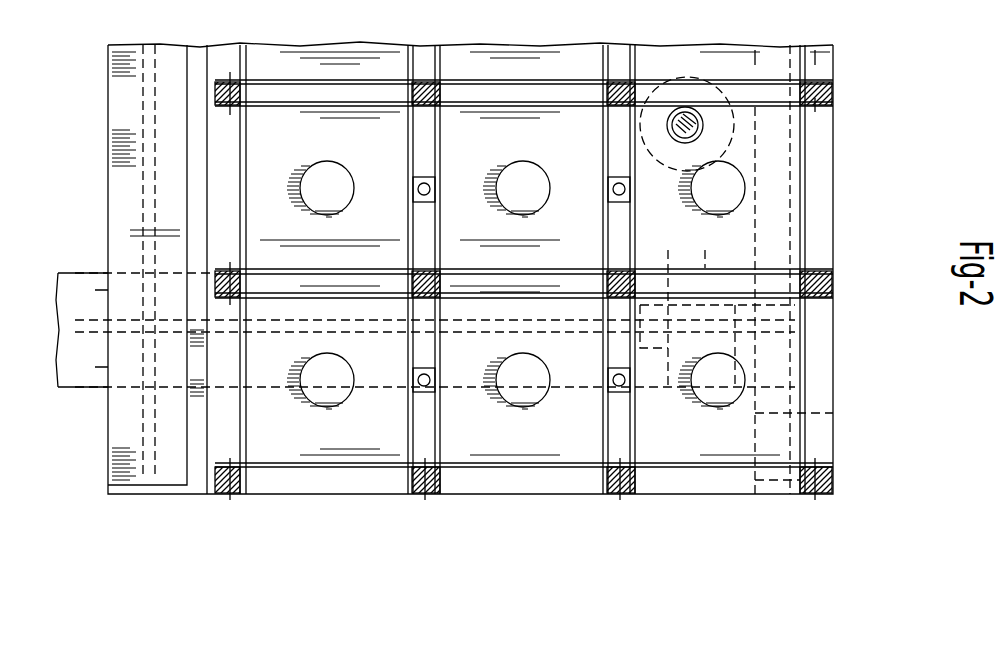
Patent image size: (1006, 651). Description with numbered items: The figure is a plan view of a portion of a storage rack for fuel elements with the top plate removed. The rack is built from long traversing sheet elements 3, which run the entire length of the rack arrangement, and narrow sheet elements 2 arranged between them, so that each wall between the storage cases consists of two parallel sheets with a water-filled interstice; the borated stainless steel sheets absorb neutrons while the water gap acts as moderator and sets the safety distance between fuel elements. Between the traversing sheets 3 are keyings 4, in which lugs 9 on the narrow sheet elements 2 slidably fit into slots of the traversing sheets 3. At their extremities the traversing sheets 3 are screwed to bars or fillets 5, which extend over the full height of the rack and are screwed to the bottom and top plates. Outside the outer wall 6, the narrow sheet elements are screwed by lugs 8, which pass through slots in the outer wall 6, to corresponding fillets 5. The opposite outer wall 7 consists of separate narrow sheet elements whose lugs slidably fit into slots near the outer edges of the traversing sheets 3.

The narrow sheet elements 2 is at (605, 243).
The long traversing sheet elements 3 is at (278, 298).
The keyings 4 is at (420, 270).
The bars or fillets 5 is at (215, 82).
The outer wall 6 is at (505, 467).
The outer wall 7 is at (245, 432).
The lugs 8 is at (228, 102).
The lugs 9 is at (410, 283).